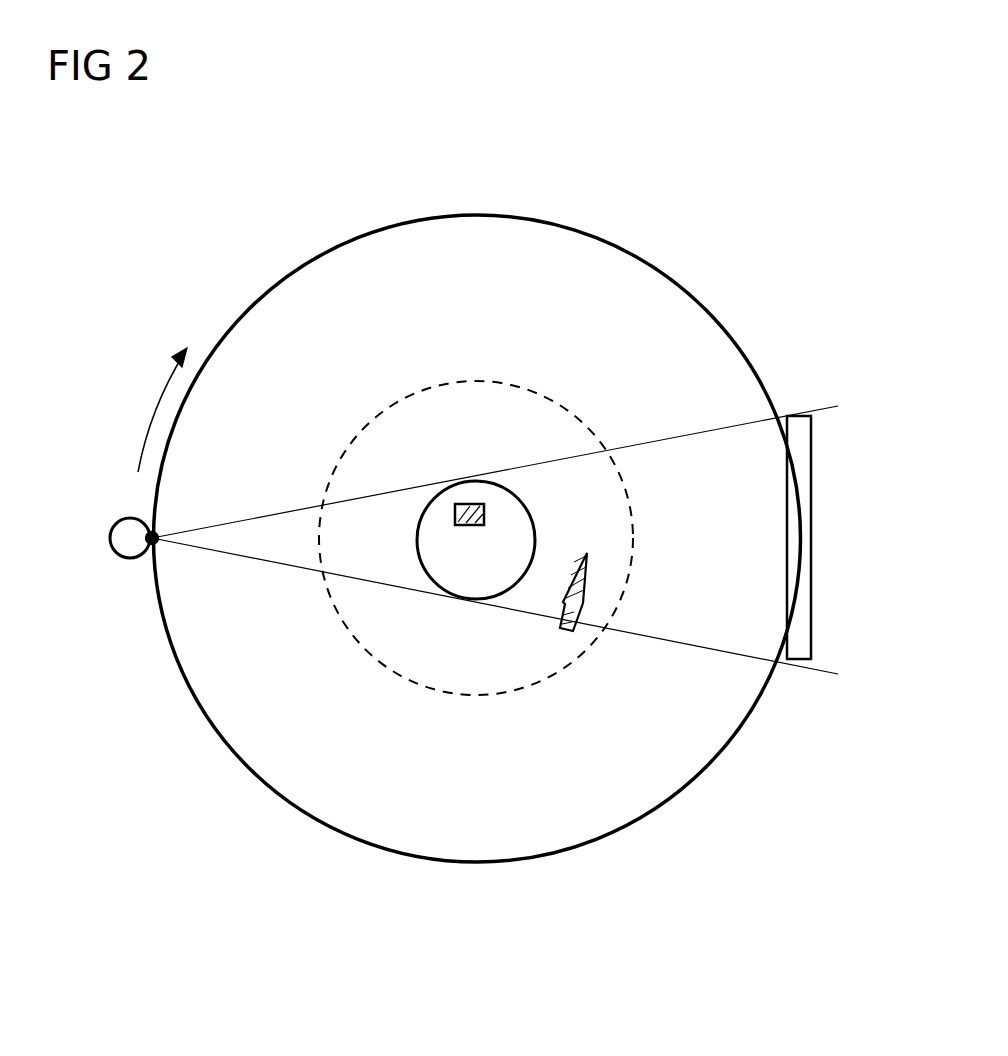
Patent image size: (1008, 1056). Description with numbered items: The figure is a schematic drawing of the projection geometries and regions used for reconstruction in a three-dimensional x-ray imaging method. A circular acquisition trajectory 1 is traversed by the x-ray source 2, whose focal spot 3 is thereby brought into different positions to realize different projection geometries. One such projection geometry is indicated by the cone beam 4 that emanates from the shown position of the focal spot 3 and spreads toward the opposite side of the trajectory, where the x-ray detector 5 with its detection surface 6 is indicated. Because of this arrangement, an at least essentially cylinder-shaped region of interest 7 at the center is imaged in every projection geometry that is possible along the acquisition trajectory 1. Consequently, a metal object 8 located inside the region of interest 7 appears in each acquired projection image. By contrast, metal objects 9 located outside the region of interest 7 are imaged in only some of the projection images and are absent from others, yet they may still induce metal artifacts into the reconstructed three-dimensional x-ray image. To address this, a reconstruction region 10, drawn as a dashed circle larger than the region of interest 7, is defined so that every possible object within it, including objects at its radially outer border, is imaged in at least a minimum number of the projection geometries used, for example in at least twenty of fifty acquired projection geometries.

The circular acquisition trajectory 1 is at (268, 288).
The x-ray source 2 is at (110, 536).
The focal spot 3 is at (152, 538).
The cone beam 4 is at (720, 428).
The x-ray detector 5 is at (811, 450).
The detection surface 6 is at (787, 592).
The region of interest 7 is at (530, 505).
The metal object 8 is at (482, 504).
The metal objects 9 is at (583, 580).
The reconstruction region 10 is at (367, 428).